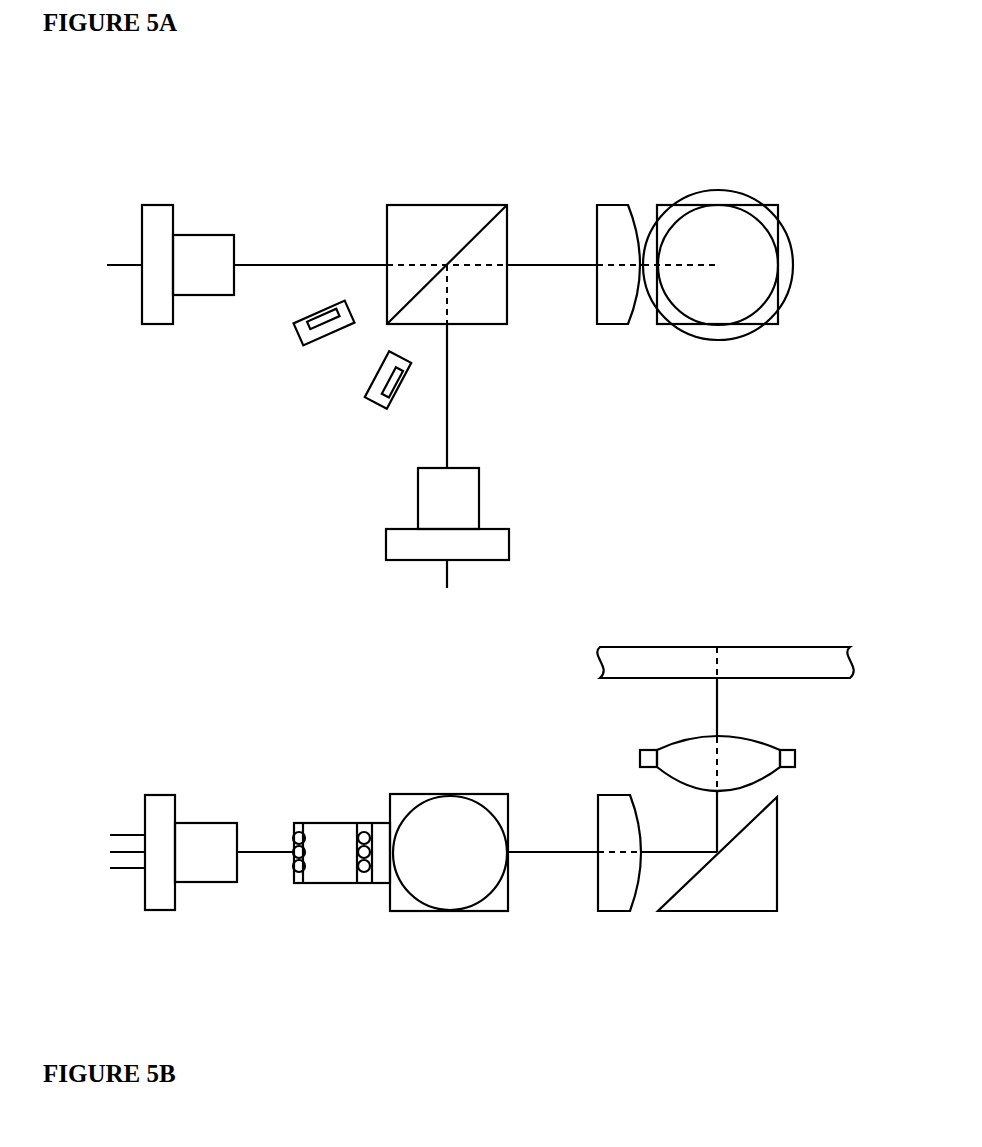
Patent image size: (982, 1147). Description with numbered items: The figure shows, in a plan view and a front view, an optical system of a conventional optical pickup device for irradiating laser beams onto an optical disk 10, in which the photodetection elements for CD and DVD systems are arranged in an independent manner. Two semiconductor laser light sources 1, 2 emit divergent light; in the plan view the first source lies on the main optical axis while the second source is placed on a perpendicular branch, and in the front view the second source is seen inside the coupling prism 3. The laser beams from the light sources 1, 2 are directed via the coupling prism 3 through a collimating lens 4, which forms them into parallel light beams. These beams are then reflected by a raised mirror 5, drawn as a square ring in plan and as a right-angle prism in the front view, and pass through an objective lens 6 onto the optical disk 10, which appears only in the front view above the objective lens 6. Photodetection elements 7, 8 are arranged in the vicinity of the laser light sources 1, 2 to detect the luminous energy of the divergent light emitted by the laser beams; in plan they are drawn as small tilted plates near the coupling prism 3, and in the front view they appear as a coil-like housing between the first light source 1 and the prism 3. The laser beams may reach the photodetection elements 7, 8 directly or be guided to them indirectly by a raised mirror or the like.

In FIG. 5A, the semiconductor laser light source 1 is at (153, 327).
In FIG. 5B, the semiconductor laser light source 1 is at (158, 910).
In FIG. 5A, the semiconductor laser light source 2 is at (509, 543).
In FIG. 5B, the semiconductor laser light source 2 is at (438, 885).
In FIG. 5A, the coupling prism 3 is at (432, 205).
In FIG. 5B, the coupling prism 3 is at (415, 794).
In FIG. 5A, the collimating lens 4 is at (605, 205).
In FIG. 5B, the collimating lens 4 is at (612, 911).
In FIG. 5A, the raised mirror 5 is at (777, 317).
In FIG. 5B, the raised mirror 5 is at (777, 887).
In FIG. 5A, the objective lens 6 is at (775, 252).
In FIG. 5B, the objective lens 6 is at (795, 758).
In FIG. 5A, the photodetection element 7 is at (303, 338).
In FIG. 5B, the photodetection element 7 is at (317, 823).
In FIG. 5A, the photodetection element 8 is at (372, 403).
In FIG. 5B, the photodetection element 8 is at (377, 883).
In FIG. 5B, the optical disk 10 is at (807, 647).